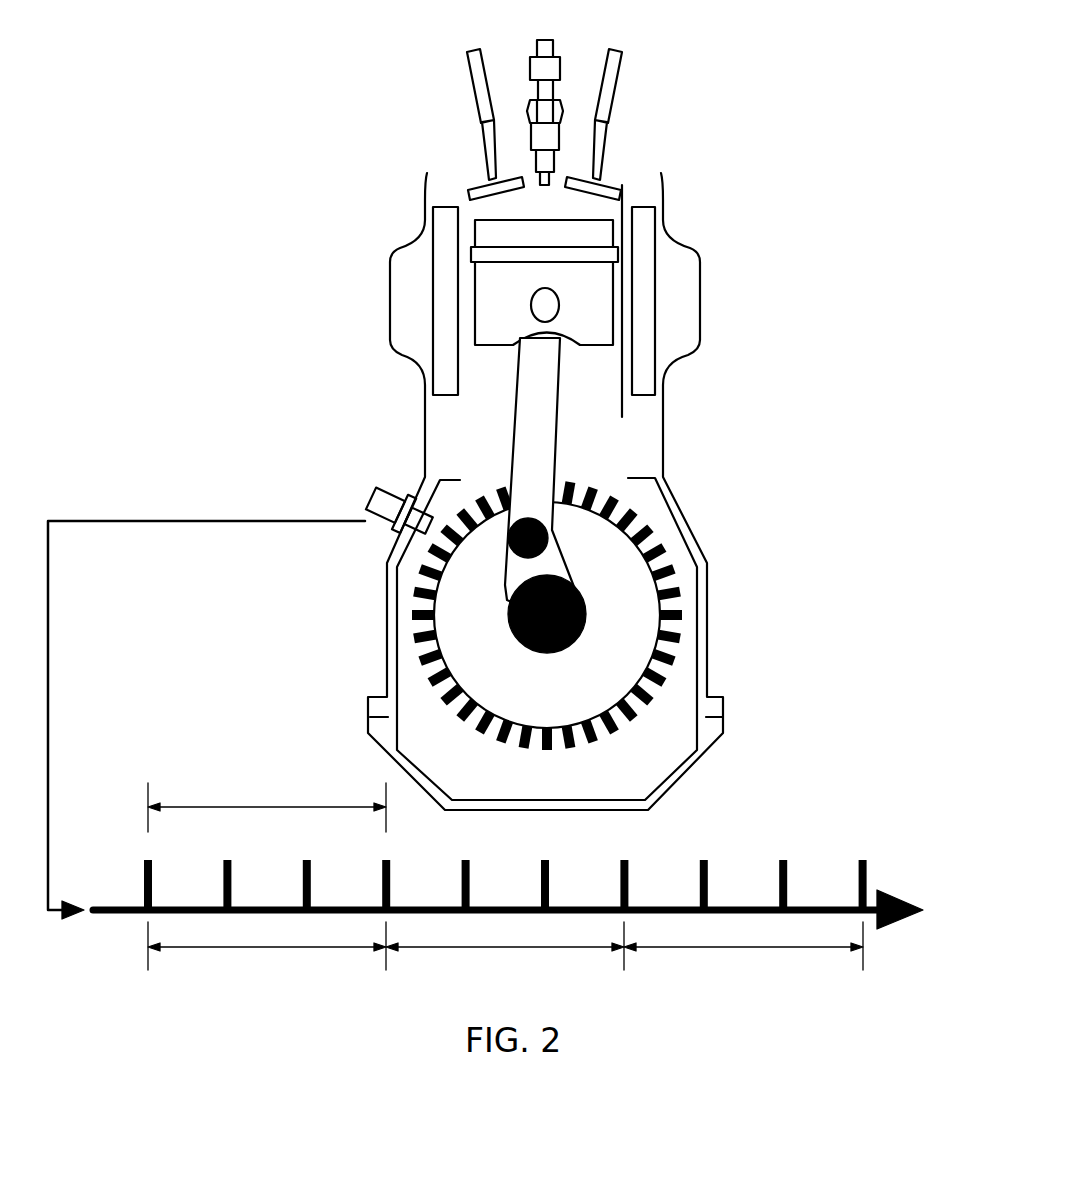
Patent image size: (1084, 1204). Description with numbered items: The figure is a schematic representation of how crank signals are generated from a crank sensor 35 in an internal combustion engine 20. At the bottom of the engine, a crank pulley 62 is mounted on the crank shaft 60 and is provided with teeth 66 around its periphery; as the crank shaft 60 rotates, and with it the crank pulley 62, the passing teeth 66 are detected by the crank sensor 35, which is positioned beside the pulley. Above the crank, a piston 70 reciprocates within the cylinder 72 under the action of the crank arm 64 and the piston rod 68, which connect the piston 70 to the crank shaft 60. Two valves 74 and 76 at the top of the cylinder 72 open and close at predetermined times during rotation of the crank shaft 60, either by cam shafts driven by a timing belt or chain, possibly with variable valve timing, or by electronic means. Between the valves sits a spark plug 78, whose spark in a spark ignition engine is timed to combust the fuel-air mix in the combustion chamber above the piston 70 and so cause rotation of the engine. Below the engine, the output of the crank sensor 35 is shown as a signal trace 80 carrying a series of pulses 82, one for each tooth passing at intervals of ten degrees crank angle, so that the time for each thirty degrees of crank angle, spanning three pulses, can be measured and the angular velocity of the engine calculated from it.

The internal combustion engine 20 is at (197, 256).
The crank sensor 35 is at (376, 500).
The crank shaft 60 is at (587, 618).
The crank pulley 62 is at (580, 538).
The crank arm 64 is at (573, 575).
The teeth 66 is at (683, 615).
The piston rod 68 is at (560, 400).
The piston 70 is at (593, 292).
The cylinder 72 is at (487, 378).
The valve 74 is at (478, 105).
The valve 76 is at (612, 110).
The spark plug 78 is at (558, 45).
The sensor signal 80 is at (898, 918).
The signal pulse 82 is at (866, 860).